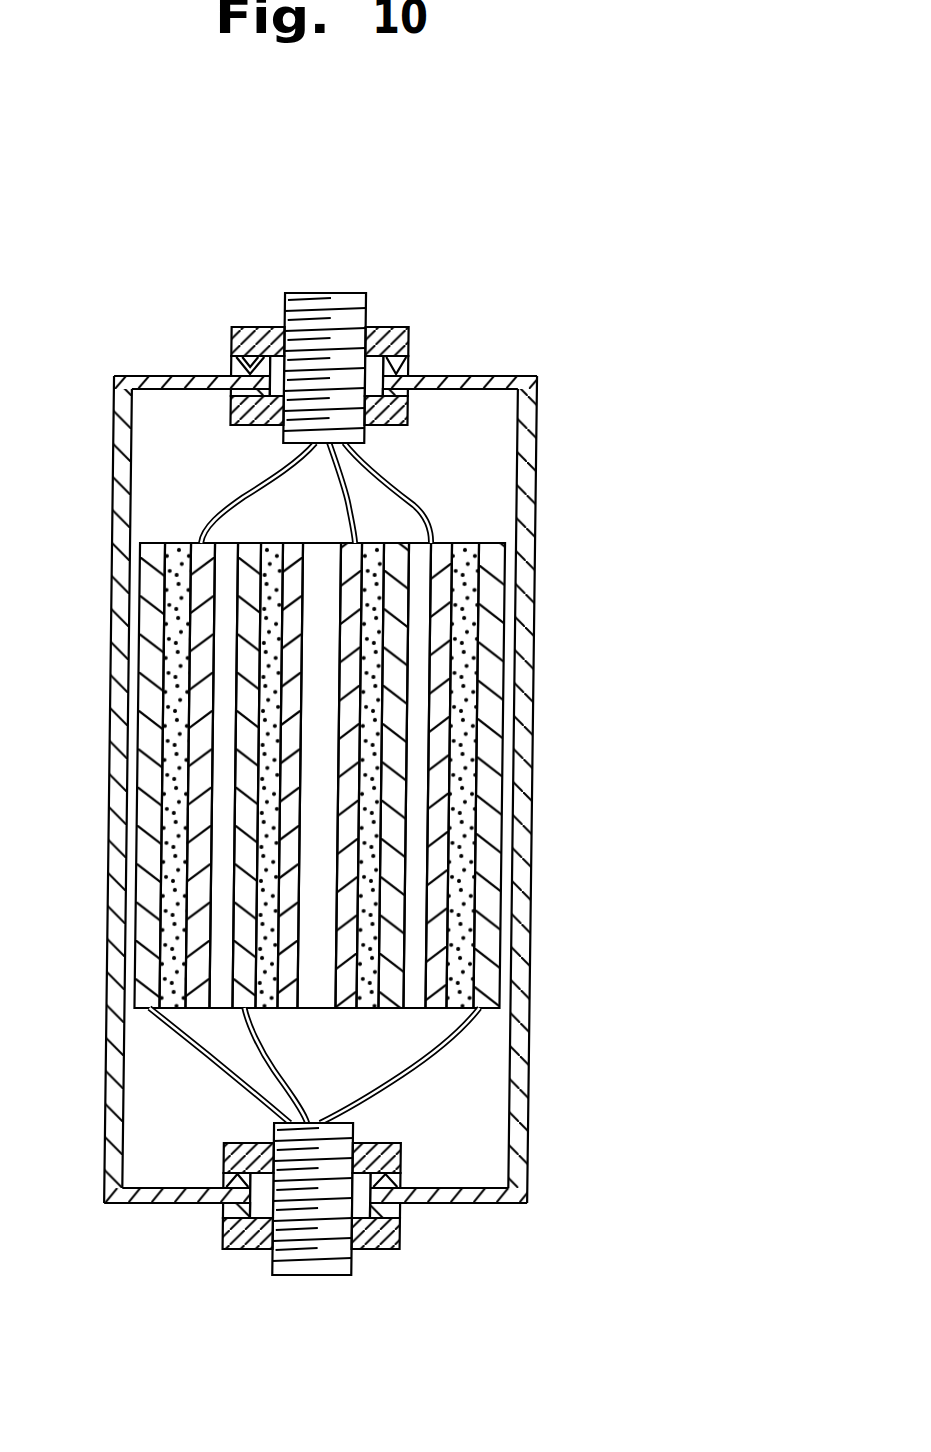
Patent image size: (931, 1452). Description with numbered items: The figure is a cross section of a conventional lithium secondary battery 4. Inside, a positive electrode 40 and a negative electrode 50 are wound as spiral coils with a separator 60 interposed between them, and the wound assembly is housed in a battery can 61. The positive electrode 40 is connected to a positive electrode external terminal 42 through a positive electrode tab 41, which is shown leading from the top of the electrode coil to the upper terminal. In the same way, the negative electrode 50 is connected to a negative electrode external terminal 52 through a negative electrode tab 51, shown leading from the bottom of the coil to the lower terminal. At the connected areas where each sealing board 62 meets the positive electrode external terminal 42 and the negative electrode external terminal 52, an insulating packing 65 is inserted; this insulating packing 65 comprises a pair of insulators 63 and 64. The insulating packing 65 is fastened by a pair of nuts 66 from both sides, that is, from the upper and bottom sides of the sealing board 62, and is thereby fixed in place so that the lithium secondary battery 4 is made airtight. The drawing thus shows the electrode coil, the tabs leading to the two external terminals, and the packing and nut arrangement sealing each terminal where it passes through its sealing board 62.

The battery 4 is at (552, 636).
The positive electrode 40 is at (447, 953).
The positive electrode tab 41 is at (243, 497).
The positive electrode external terminal 42 is at (340, 300).
The negative electrode 50 is at (495, 711).
The negative electrode tab 51 is at (465, 1040).
The negative electrode external terminal 52 is at (318, 1275).
The separator 60 is at (468, 863).
The battery can 61 is at (118, 821).
The sealing board 62 is at (515, 374).
The insulator 63 is at (233, 367).
The insulator 64 is at (227, 389).
The insulating packing 65 is at (100, 287).
The nut 66 is at (262, 337).